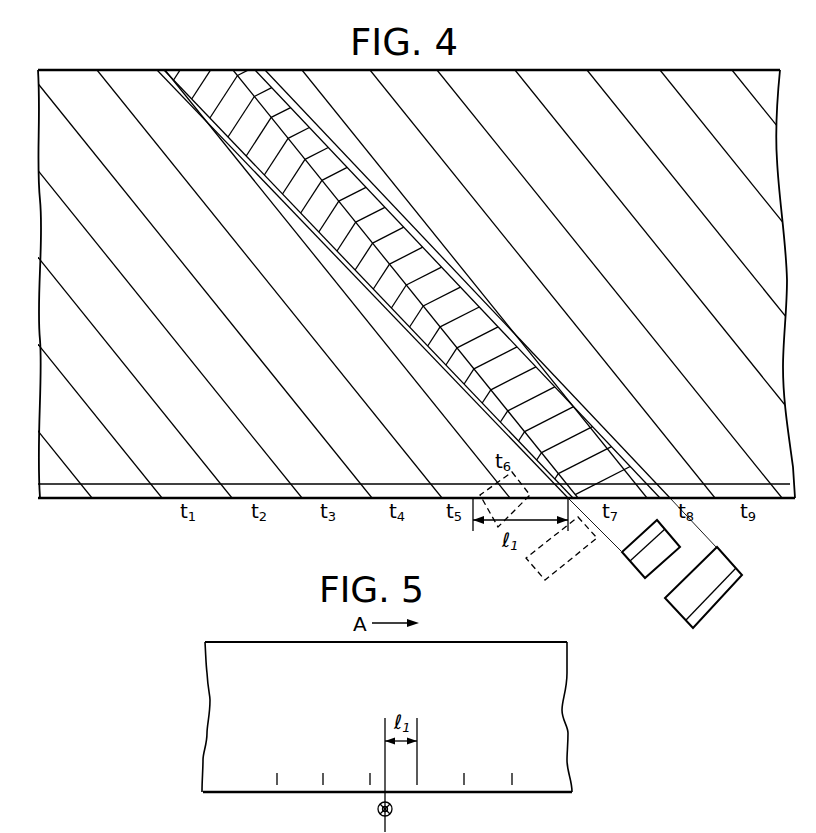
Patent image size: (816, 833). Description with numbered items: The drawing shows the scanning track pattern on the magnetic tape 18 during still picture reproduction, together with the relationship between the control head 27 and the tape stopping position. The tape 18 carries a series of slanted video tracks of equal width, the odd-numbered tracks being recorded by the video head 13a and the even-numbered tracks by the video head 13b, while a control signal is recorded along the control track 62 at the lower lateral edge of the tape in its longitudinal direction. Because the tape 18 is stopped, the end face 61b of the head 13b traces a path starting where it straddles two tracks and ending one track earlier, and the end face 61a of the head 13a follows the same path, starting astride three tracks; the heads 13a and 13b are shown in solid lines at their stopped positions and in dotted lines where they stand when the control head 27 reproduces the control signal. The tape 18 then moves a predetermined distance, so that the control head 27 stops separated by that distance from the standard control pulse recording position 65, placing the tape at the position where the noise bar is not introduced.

In FIG. 4, the magnetic tape 18 is at (119, 504).
In FIG. 5, the magnetic tape 18 is at (275, 646).
In FIG. 4, the control track 62 is at (214, 491).
In FIG. 4, the end face of head 13a 61a is at (683, 614).
In FIG. 4, the end face of head 13b 61b is at (645, 573).
In FIG. 4, the video head 13a is at (720, 614).
In FIG. 4, the video head 13b is at (622, 557).
In FIG. 5, the standard control pulse recording position 65 is at (419, 780).
In FIG. 5, the control head 27 is at (378, 803).